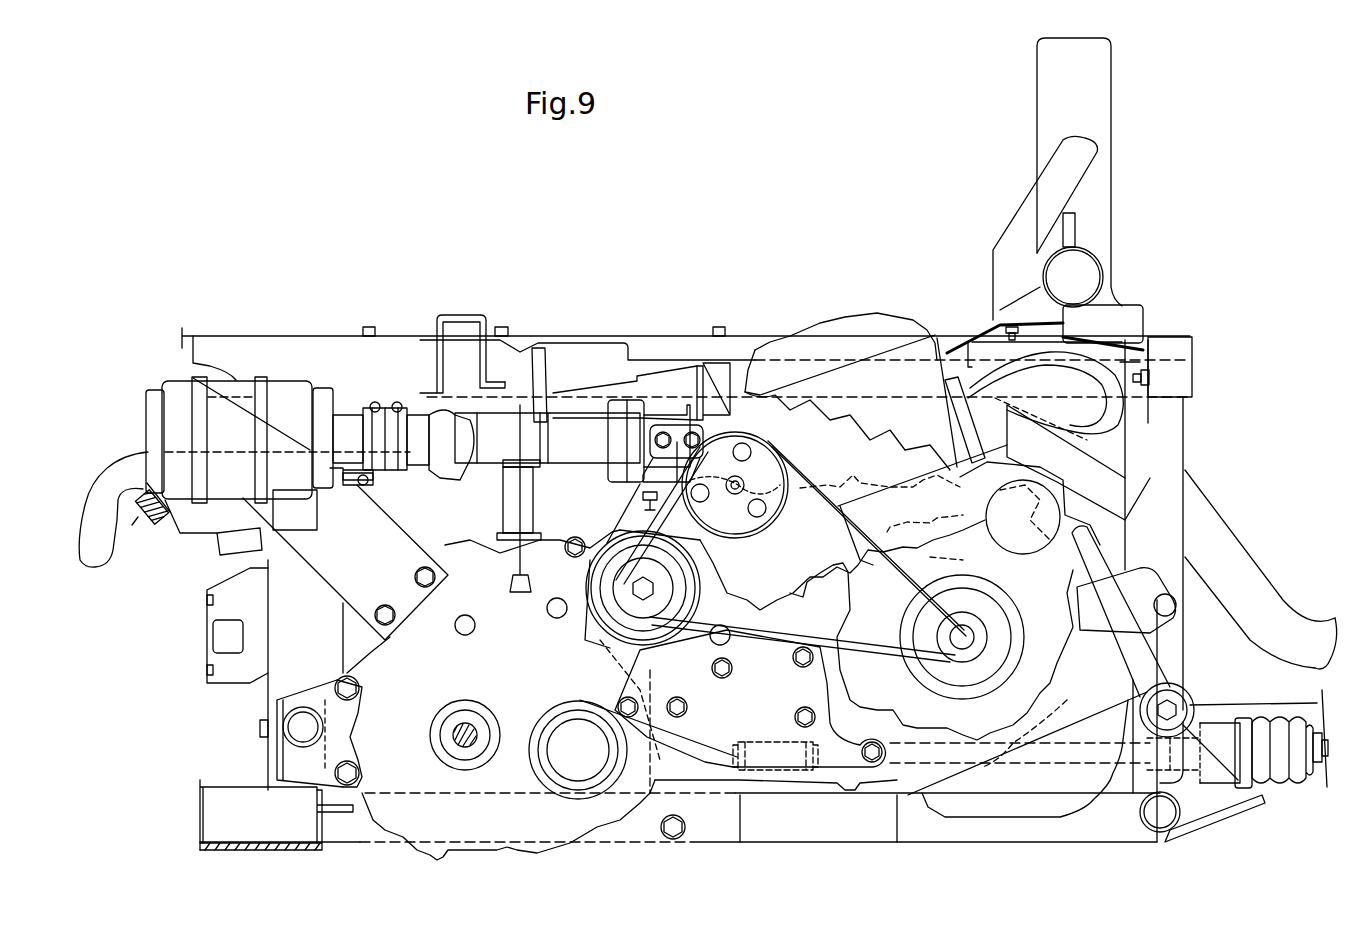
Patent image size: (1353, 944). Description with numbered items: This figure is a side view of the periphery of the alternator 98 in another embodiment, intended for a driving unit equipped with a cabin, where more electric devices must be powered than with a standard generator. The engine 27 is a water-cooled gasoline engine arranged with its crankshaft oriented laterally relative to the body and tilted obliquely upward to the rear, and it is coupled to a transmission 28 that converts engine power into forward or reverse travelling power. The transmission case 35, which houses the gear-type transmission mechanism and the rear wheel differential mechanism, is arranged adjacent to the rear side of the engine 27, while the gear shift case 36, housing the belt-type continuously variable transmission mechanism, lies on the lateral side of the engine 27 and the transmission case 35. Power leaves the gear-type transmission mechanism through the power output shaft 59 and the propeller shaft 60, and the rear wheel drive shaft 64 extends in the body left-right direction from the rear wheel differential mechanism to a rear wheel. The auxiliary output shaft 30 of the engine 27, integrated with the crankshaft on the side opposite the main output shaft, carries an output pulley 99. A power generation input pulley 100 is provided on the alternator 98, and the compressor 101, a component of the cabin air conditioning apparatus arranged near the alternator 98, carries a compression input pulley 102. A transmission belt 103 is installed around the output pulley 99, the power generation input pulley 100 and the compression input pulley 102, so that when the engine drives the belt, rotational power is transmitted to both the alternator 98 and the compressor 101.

The engine 27 is at (851, 326).
The transmission 28 is at (605, 497).
The auxiliary output shaft 30 is at (965, 630).
The transmission case 35 is at (475, 548).
The gear shift case 36 is at (853, 478).
The power output shaft 59 is at (907, 777).
The propeller shaft 60 is at (1317, 703).
The rear wheel drive shaft 64 is at (467, 723).
The alternator 98 is at (598, 665).
The output pulley 99 is at (958, 658).
The power generation input pulley 100 is at (617, 588).
The compressor 101 is at (733, 425).
The compression input pulley 102 is at (762, 448).
The transmission belt 103 is at (777, 645).